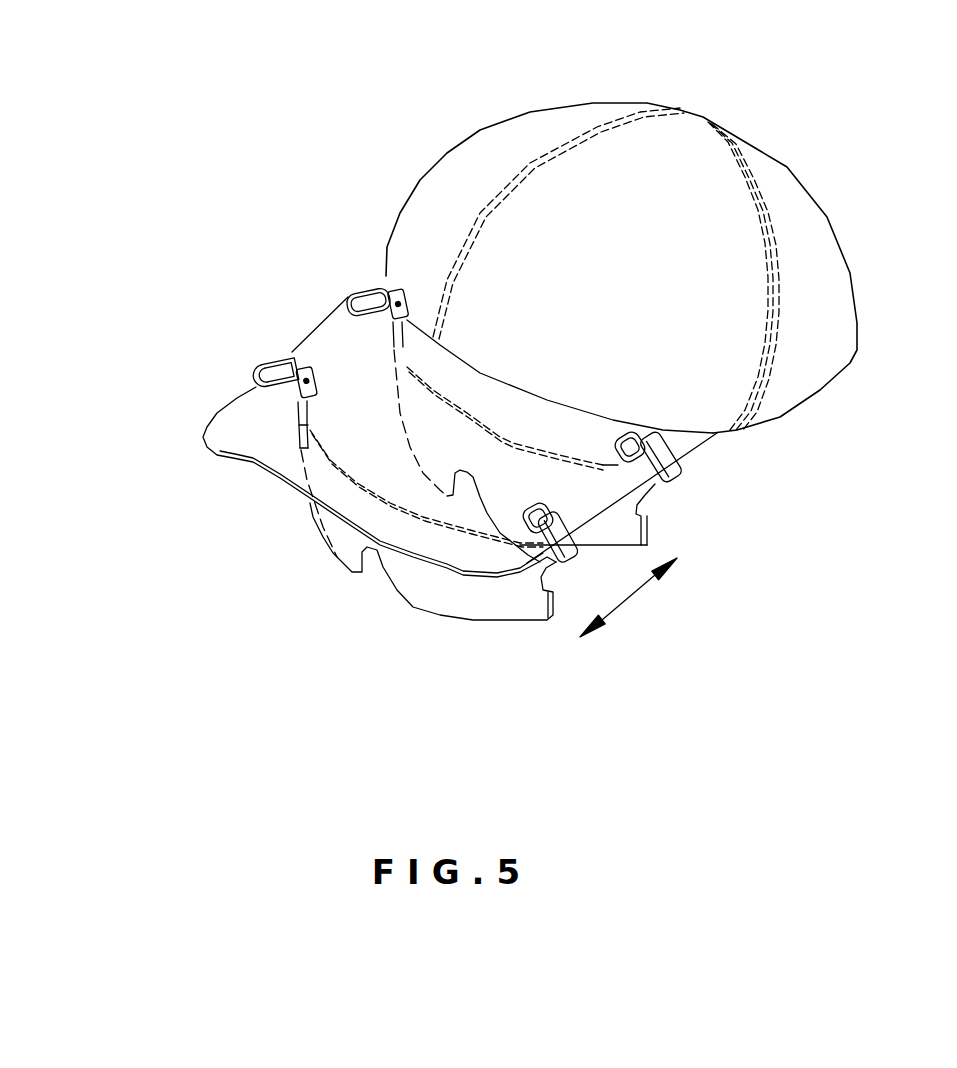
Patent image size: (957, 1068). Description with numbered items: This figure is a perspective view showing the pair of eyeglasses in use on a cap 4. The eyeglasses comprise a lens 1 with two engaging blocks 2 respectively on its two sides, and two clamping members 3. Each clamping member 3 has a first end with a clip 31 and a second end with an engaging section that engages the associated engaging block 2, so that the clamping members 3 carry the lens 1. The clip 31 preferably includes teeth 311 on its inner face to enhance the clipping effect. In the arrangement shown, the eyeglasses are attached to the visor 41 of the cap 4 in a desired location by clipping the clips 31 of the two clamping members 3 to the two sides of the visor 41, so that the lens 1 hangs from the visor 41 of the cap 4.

The lens 1 is at (338, 533).
The engaging block 2 is at (296, 397).
The clamping member 3 is at (258, 352).
The clip 31 is at (275, 354).
The teeth 311 is at (255, 370).
The cap 4 is at (462, 150).
The visor 41 is at (322, 322).